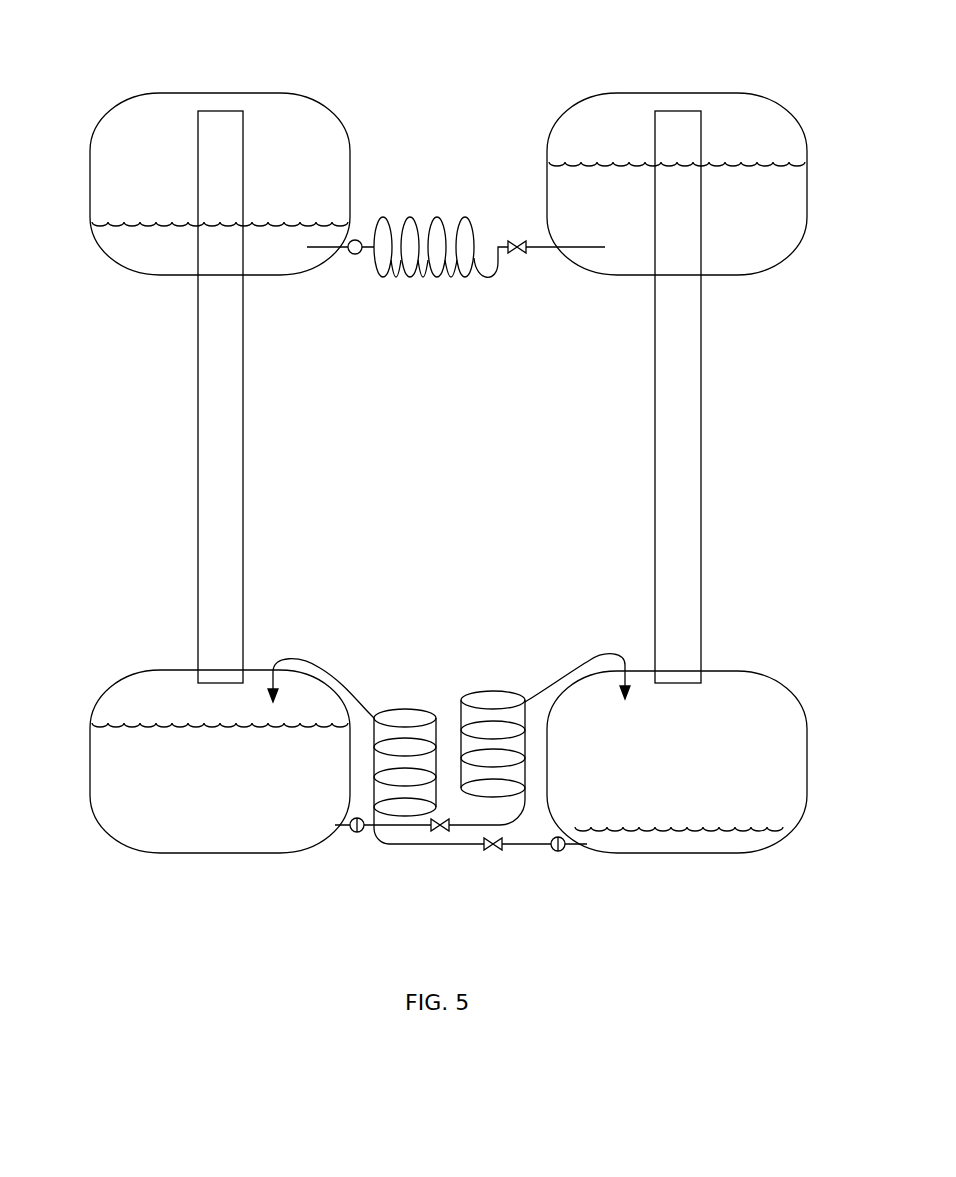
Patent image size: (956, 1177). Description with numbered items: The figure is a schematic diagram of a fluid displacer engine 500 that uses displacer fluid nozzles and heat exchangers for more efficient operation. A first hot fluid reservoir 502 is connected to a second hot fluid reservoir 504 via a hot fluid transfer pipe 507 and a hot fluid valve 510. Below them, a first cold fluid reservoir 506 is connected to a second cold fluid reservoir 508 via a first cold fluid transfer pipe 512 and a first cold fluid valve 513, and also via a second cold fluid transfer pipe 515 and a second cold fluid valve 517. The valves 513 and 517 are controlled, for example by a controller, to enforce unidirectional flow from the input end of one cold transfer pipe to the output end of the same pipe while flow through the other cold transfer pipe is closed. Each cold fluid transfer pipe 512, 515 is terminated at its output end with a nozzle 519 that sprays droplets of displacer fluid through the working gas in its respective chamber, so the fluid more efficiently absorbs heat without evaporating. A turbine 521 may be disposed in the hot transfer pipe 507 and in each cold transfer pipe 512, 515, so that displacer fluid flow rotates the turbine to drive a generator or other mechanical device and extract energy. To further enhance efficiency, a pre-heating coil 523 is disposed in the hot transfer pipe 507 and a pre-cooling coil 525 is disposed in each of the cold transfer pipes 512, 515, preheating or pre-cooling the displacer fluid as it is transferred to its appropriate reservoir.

The fluid displacer engine 500 is at (129, 33).
The first hot fluid reservoir 502 is at (105, 183).
The second upper tank 504 is at (785, 148).
The first cold fluid reservoir 506 is at (122, 705).
The second cold fluid reservoir 508 is at (778, 709).
The hot fluid valve 510 is at (356, 256).
The hot fluid transfer pipe 507 is at (543, 252).
The pre-heating coil 523 is at (413, 220).
The turbine 521 is at (513, 242).
The nozzle 519 is at (315, 700).
The pre-cooling coil 525 is at (405, 710).
The first cold fluid valve 513 is at (356, 833).
The first cold fluid transfer pipe 512 is at (398, 829).
The second cold fluid transfer pipe 515 is at (522, 847).
The second cold fluid valve 517 is at (558, 853).